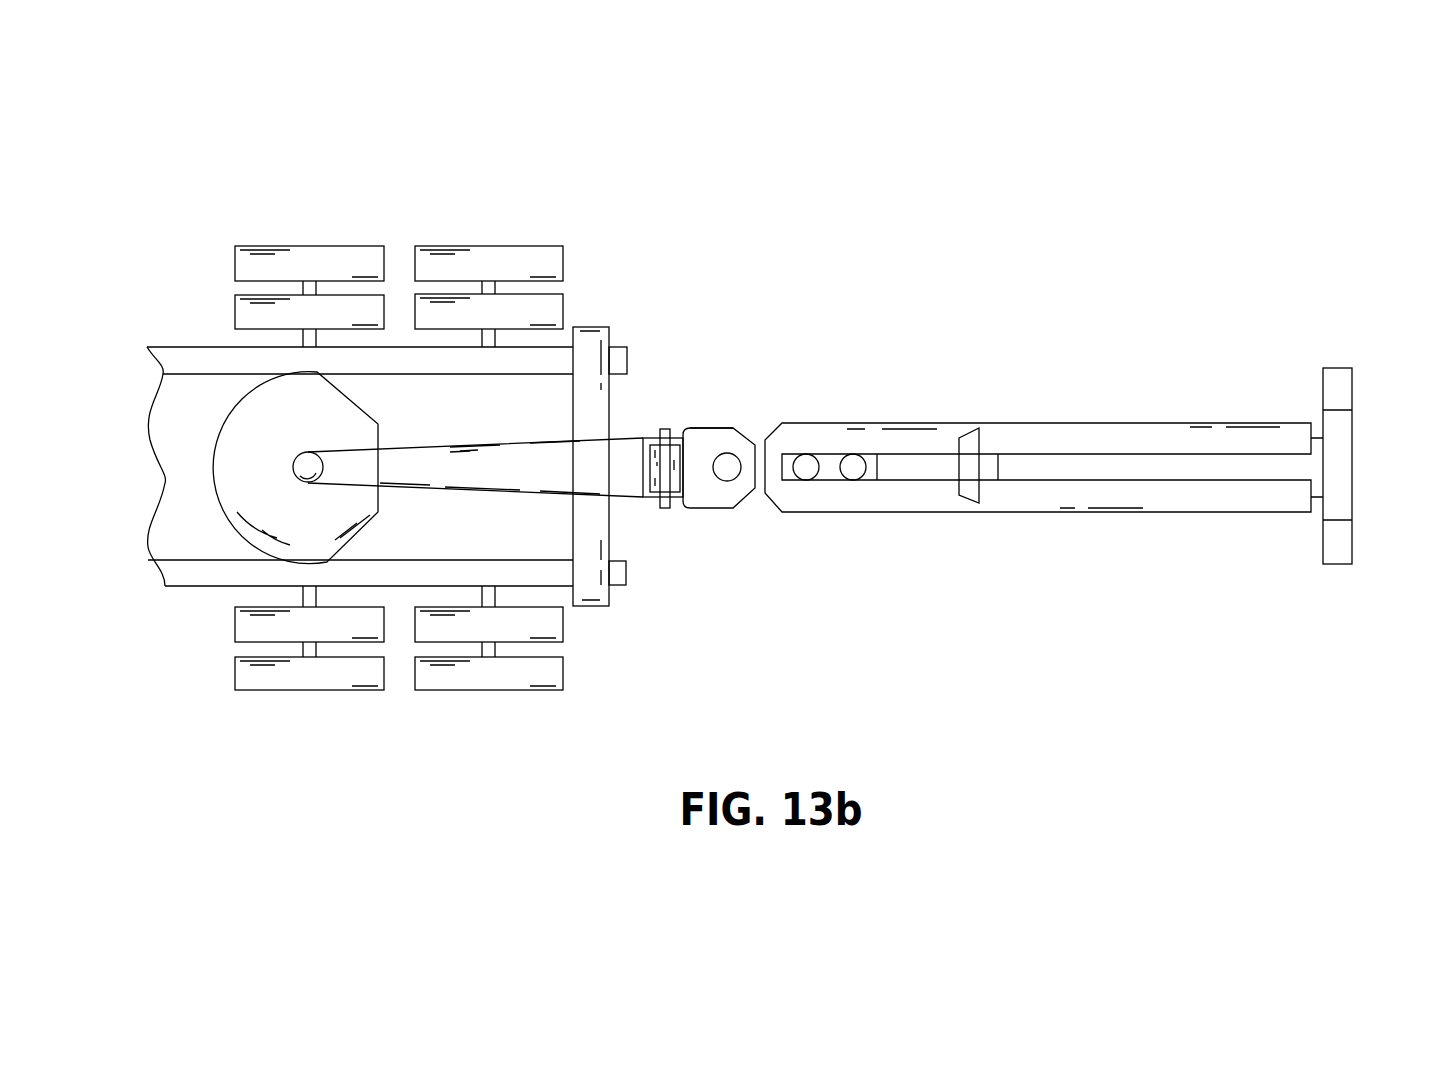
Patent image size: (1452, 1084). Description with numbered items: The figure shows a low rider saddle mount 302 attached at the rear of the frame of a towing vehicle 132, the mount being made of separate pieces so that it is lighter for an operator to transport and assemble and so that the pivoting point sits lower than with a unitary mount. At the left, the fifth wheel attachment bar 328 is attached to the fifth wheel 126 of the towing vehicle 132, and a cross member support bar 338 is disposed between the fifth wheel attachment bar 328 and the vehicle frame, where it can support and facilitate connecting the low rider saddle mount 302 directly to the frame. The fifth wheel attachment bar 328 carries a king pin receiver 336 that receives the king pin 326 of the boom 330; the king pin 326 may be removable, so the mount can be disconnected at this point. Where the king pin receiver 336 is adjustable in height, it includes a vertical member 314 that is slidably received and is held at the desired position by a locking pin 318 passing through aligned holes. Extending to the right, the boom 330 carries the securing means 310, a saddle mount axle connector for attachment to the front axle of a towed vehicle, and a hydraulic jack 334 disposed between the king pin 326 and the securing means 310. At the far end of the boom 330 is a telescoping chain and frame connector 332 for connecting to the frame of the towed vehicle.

The fifth wheel 126 is at (230, 410).
The towing vehicle 132 is at (197, 586).
The cross member support bar 338 is at (592, 327).
The low rider saddle mount 302 is at (815, 408).
The fifth wheel attachment bar 328 is at (647, 409).
The boom 330 is at (1097, 415).
The king pin receiver 336 is at (708, 428).
The vertical member 314 is at (687, 503).
The locking pin 318 is at (663, 510).
The king pin 326 is at (806, 454).
The hydraulic jack 334 is at (853, 454).
The securing means 310 is at (965, 436).
The telescoping chain and frame connector 332 is at (1352, 394).